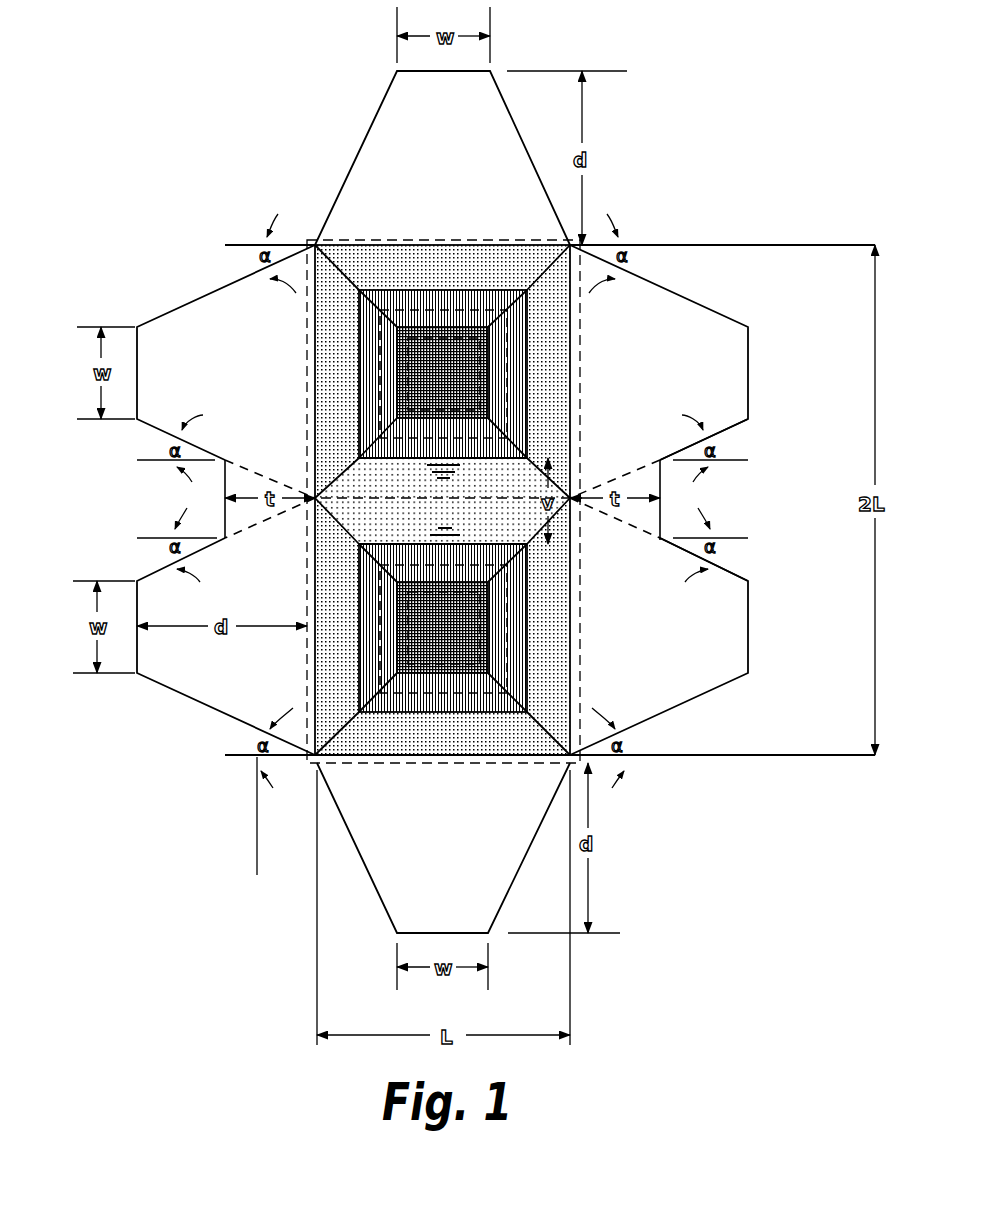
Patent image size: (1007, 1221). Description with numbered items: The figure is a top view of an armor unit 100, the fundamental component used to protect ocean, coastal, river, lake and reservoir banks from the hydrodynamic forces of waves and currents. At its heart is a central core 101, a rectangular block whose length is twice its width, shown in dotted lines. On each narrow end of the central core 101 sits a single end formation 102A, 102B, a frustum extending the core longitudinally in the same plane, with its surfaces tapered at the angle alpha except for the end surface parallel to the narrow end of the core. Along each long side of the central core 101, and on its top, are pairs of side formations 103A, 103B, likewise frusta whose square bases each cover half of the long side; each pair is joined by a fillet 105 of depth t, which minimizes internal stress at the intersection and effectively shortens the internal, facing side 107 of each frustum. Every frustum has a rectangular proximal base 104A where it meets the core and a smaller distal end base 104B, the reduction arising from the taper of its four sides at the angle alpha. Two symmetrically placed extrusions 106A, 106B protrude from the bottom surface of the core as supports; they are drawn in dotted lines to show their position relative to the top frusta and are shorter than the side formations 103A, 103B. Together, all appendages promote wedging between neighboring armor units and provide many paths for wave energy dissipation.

The armor unit 100 is at (238, 39).
The central core 101 is at (402, 238).
The end formation 102A is at (393, 122).
The end formation 102B is at (387, 855).
The side formation 103A is at (388, 273).
The side formation 103B is at (225, 742).
The proximal base 104A is at (475, 757).
The distal end base 104B is at (475, 933).
The fillet 105 is at (360, 483).
The extrusion 106A is at (505, 350).
The extrusion 106B is at (503, 603).
The internal side 107 is at (735, 432).